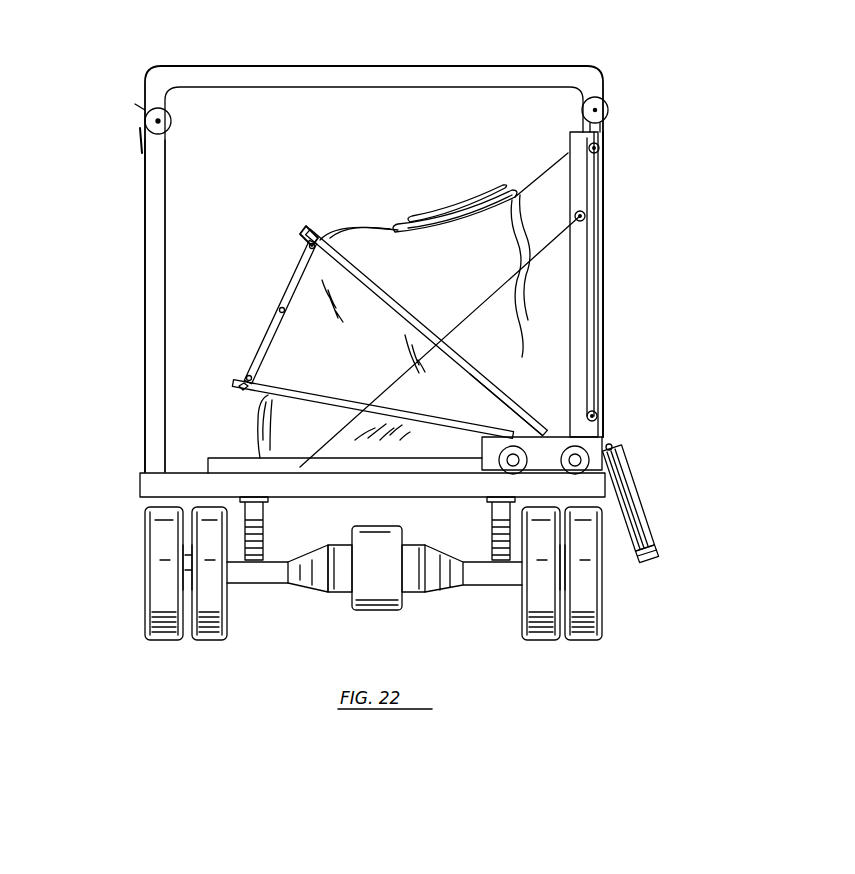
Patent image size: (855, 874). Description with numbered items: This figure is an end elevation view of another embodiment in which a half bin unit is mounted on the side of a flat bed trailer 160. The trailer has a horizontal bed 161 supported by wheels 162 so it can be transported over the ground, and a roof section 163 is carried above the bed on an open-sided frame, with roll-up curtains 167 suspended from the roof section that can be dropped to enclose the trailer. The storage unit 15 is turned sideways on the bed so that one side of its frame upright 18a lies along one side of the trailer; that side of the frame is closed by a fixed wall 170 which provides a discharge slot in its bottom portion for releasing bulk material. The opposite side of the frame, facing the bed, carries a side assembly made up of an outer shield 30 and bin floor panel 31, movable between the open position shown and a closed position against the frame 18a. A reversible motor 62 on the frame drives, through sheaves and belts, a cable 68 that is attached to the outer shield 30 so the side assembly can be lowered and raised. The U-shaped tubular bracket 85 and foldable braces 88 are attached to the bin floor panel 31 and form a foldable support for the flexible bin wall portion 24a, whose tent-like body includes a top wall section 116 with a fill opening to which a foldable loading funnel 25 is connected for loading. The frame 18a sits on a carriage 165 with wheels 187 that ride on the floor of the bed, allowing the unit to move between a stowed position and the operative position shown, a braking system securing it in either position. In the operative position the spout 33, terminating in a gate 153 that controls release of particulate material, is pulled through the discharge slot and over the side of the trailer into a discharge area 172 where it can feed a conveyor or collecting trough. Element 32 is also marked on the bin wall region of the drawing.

The roof section 163 is at (430, 67).
The wheels 162 is at (145, 230).
The roll-up curtains 167 is at (145, 120).
The reversible motor 62 is at (608, 110).
The flexible bin wall portion 24a is at (522, 165).
The storage unit 15 is at (302, 216).
The top wall section 116 is at (366, 228).
The foldable loading funnel 25 is at (443, 222).
The frame upright 18a is at (629, 284).
The foldable braces 88 is at (285, 287).
The U-shaped tubular bracket 85 is at (412, 280).
The fixed wall 170 is at (608, 290).
The bin floor panel 31 is at (302, 386).
The cable 68 is at (408, 368).
The carriage 165 is at (503, 428).
The bag side wall 32 is at (245, 423).
The outer shield 30 is at (282, 458).
The discharge area 172 is at (618, 447).
The spout 33 is at (663, 501).
The gate 153 is at (662, 526).
The flat bed trailer 160 is at (336, 526).
The horizontal bed 161 is at (140, 486).
The carriage wheels 187 is at (575, 470).